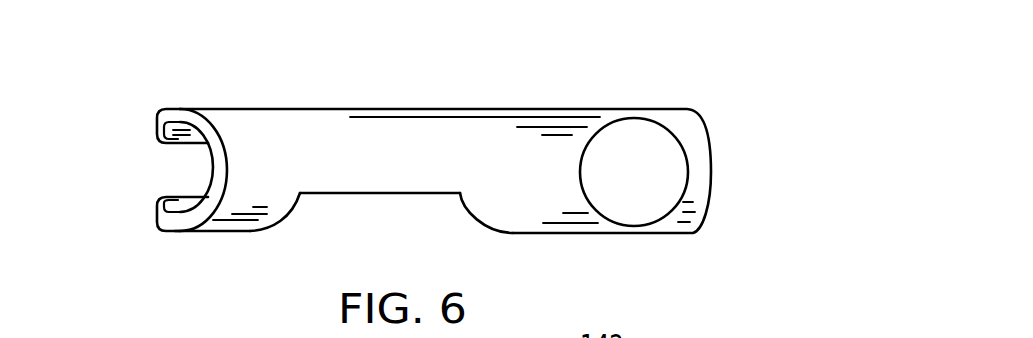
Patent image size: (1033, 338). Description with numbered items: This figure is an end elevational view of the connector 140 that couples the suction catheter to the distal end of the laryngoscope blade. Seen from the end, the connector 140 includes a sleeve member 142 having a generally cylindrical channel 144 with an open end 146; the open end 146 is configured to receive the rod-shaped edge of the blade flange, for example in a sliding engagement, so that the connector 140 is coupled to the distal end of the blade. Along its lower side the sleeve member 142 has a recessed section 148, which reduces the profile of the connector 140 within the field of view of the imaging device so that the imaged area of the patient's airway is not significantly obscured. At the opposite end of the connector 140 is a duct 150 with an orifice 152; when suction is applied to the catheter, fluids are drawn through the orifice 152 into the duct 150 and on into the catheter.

The connector 140 is at (717, 122).
The sleeve member 142 is at (488, 142).
The cylindrical channel 144 is at (210, 157).
The open end 146 is at (178, 178).
The recessed section 148 is at (392, 213).
The duct 150 is at (668, 191).
The orifice 152 is at (628, 152).